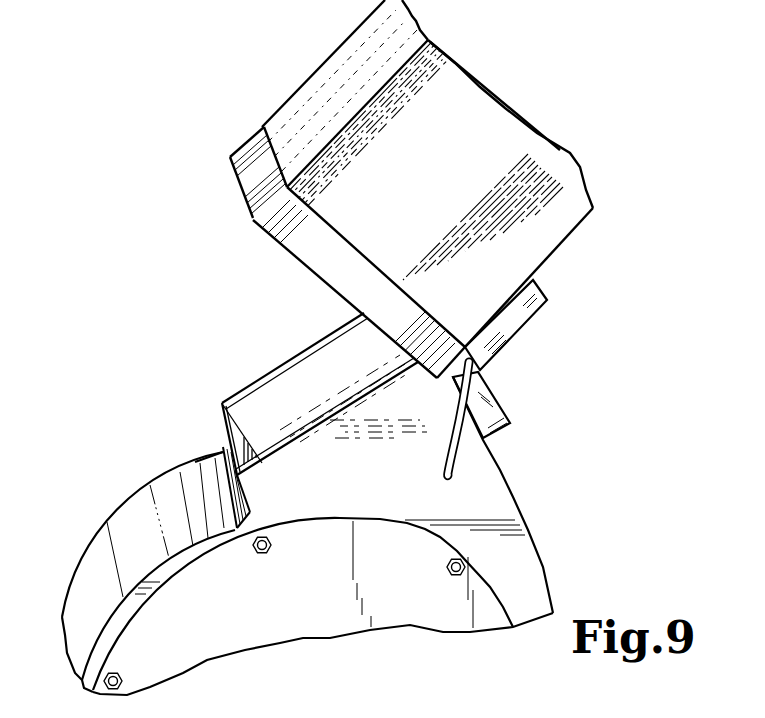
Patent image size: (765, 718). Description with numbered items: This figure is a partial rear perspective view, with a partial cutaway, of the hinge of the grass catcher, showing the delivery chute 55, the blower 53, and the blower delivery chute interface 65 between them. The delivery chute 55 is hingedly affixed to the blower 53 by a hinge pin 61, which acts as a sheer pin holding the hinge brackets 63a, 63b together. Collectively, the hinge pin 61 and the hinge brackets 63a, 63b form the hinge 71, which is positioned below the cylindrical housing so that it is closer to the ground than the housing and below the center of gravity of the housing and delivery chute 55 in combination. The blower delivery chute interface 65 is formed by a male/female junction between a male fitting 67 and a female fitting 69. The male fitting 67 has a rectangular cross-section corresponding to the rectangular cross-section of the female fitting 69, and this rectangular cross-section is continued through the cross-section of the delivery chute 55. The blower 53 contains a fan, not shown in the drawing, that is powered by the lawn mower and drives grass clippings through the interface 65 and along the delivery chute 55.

The blower 53 is at (333, 592).
The delivery chute 55 is at (449, 220).
The hinge pin 61 is at (458, 468).
The hinge bracket 63a is at (510, 425).
The hinge bracket 63b is at (522, 326).
The blower delivery chute interface 65 is at (298, 332).
The male fitting 67 is at (221, 412).
The female fitting 69 is at (252, 216).
The hinge 71 is at (520, 372).